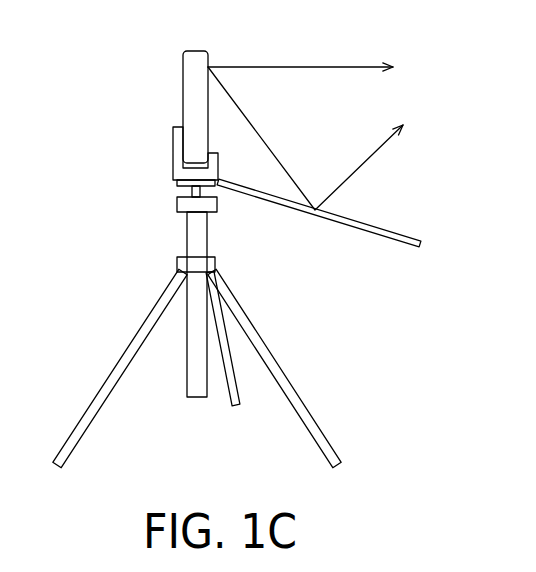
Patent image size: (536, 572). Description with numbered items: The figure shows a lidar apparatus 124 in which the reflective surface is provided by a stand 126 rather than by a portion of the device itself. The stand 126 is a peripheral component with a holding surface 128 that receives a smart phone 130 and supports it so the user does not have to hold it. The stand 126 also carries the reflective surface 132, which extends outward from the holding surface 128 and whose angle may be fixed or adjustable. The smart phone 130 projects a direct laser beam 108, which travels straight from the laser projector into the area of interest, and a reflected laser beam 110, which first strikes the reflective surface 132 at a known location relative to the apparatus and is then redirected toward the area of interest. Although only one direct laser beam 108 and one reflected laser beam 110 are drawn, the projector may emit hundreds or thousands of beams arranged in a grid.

The direct laser beam 108 is at (315, 67).
The reflected laser beam 110 is at (360, 172).
The lidar apparatus 124 is at (242, 259).
The stand 126 is at (131, 283).
The holding surface 128 is at (173, 163).
The smart phone 130 is at (183, 72).
The reflective surface 132 is at (360, 233).